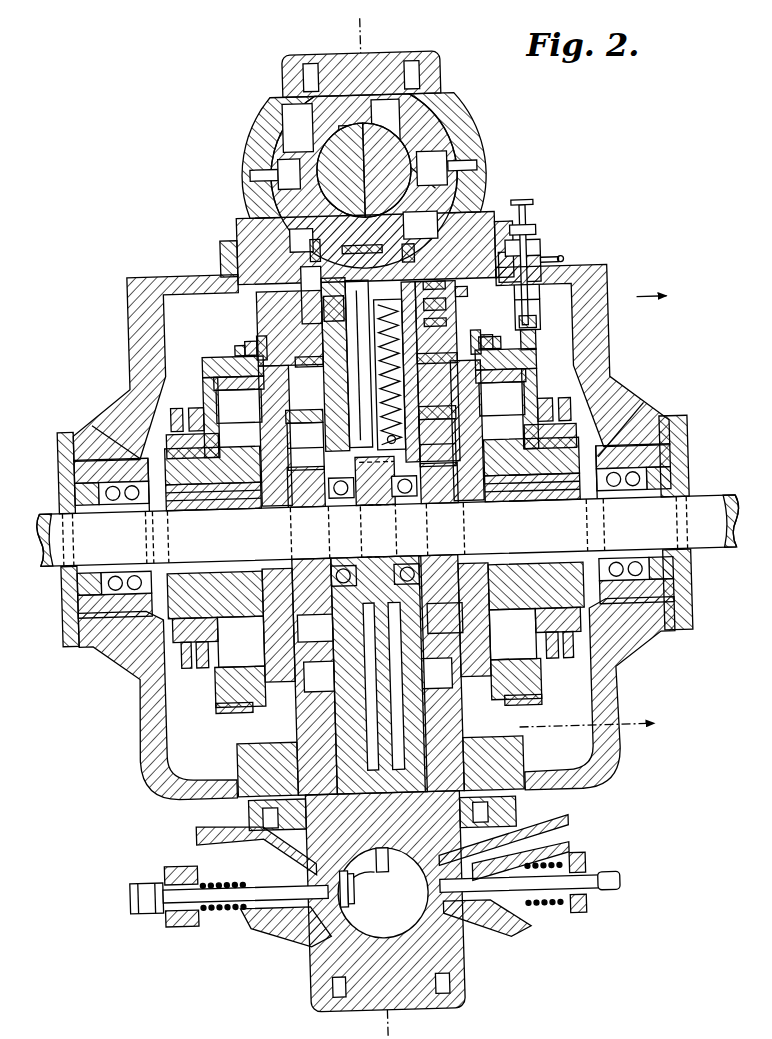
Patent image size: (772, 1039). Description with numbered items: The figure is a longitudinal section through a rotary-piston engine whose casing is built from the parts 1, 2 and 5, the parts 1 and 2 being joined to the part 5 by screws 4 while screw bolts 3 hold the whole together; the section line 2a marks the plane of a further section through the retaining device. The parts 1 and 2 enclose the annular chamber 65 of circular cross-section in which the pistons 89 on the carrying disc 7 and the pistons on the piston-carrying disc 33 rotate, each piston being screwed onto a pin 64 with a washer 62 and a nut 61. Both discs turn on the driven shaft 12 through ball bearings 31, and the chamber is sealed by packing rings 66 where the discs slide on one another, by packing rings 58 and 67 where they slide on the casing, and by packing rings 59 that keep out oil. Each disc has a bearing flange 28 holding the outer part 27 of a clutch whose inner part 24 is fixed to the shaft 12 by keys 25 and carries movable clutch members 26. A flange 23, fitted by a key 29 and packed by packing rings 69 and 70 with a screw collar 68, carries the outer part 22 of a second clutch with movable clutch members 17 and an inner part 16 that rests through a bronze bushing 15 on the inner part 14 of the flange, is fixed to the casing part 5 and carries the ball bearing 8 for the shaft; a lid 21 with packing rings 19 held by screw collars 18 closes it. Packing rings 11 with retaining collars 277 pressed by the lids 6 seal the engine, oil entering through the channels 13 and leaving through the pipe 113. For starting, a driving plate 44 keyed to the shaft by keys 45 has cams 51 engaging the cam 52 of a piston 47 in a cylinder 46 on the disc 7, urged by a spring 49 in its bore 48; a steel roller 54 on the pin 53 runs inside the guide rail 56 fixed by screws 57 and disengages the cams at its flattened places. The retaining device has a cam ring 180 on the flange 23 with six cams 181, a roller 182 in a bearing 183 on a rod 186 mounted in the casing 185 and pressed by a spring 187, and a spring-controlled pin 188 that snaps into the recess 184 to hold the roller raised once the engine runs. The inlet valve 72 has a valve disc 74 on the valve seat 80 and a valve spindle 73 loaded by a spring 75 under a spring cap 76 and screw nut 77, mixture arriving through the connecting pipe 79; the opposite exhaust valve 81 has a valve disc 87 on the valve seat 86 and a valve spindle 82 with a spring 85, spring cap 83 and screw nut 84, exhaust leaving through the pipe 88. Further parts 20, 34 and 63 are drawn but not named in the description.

The casing part 1 is at (357, 50).
The casing part 2 is at (395, 70).
The section line 2a is at (609, 509).
The screw bolts 3 is at (432, 74).
The screws 4 is at (228, 252).
The casing part 5 is at (134, 340).
The lids 6 is at (60, 478).
The carrying disc 7 is at (425, 606).
The ball bearing 8 is at (125, 500).
The packing rings 11 is at (110, 500).
The driven shaft 12 is at (700, 520).
The channels 13 is at (632, 421).
The inner part of flange 14 is at (190, 505).
The bronze bushing 15 is at (225, 505).
The inner clutch part 16 is at (254, 505).
The movable clutch members 17 is at (371, 418).
The screw collars 18 is at (580, 430).
The packing rings 19 is at (372, 453).
The pressure ring 20 is at (205, 410).
The lid 21 is at (218, 380).
The outer clutch part 22 is at (212, 360).
The flange 23 is at (384, 394).
The inner clutch part 24 is at (290, 505).
The keys 25 is at (285, 508).
The movable clutch members 26 is at (373, 476).
The outer clutch part 27 is at (372, 438).
The bearing flange 28 is at (340, 395).
The key 29 is at (382, 366).
The ball bearings 31 is at (343, 505).
The piston-carrying disc 33 is at (300, 296).
The lower drum 34 is at (378, 675).
The driving plate 44 is at (376, 506).
The keys 45 is at (388, 505).
The cylinder 46 is at (358, 364).
The piston 47 is at (355, 365).
The bore 48 is at (380, 405).
The spring 49 is at (390, 438).
The cams 51 is at (344, 313).
The cam 52 is at (424, 371).
The pin 53 is at (439, 314).
The steel roller 54 is at (438, 289).
The guide rail 56 is at (423, 253).
The screws 57 is at (467, 292).
The packing rings 58 is at (405, 235).
The packing rings 59 is at (327, 252).
The nut 61 is at (372, 140).
The washer 62 is at (385, 155).
The adjusting screw 63 is at (290, 172).
The pins 64 is at (378, 196).
The annular chamber 65 is at (384, 901).
The packing rings 66 is at (362, 242).
The packing rings 67 is at (325, 290).
The screw collar 68 is at (365, 333).
The packing ring 69 is at (368, 345).
The packing ring 70 is at (268, 334).
The inlet valve 72 is at (500, 930).
The valve spindle 73 is at (519, 873).
The valve disc 74 is at (390, 891).
The spring 75 is at (548, 911).
The spring cap 76 is at (576, 912).
The screw nut 77 is at (590, 880).
The connecting pipe 79 is at (562, 828).
The valve seat 80 is at (402, 871).
The exhaust valve 81 is at (255, 930).
The valve spindle 82 is at (262, 887).
The spring cap 83 is at (168, 921).
The screw nut 84 is at (132, 878).
The spring 85 is at (212, 908).
The valve seat 86 is at (336, 884).
The valve disc 87 is at (355, 888).
The pipe 88 is at (192, 837).
The pistons 89 is at (430, 165).
The pipe 113 is at (111, 434).
The cam ring 180 is at (541, 342).
The cams 181 is at (542, 326).
The roller 182 is at (538, 316).
The bearing 183 is at (501, 291).
The recess 184 is at (548, 293).
The casing 185 is at (548, 252).
The rod 186 is at (535, 222).
The spring 187 is at (544, 234).
The spring-controlled pin 188 is at (572, 265).
The retaining collars 277 is at (100, 520).